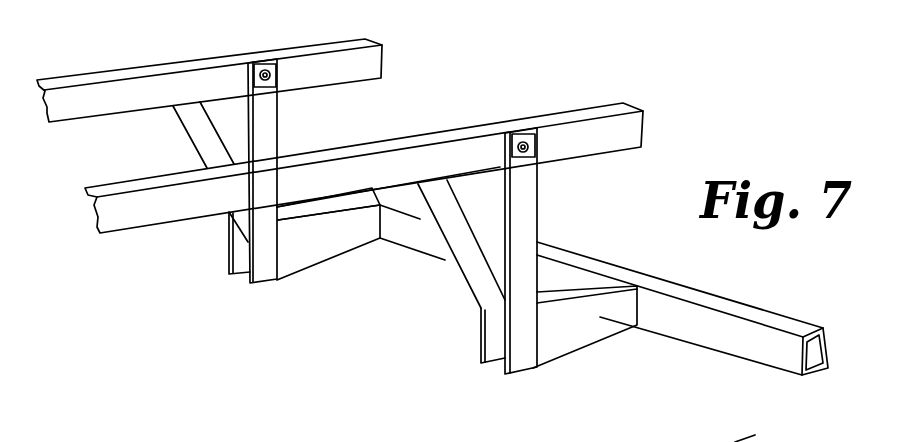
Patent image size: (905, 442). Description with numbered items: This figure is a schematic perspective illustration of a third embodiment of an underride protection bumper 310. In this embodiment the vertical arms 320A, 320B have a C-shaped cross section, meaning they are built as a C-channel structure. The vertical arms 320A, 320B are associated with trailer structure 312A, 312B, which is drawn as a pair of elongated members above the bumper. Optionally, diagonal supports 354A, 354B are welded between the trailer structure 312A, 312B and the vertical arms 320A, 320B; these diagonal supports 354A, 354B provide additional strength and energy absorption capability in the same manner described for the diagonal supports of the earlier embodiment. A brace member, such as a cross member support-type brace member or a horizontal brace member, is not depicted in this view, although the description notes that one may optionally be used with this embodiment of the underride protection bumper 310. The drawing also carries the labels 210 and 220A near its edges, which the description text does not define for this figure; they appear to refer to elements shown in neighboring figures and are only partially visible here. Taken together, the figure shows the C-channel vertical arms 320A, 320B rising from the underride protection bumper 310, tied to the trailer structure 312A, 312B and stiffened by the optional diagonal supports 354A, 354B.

The vehicle / supporting structure (partially shown) 210 is at (750, 0).
The receiver member (partially shown) 220A is at (611, 3).
The underride protection bumper 310 is at (587, 369).
The trailer structure 312A is at (168, 206).
The trailer structure 312B is at (133, 93).
The vertical arm 320A is at (528, 203).
The vertical arm 320B is at (267, 117).
The diagonal support 354A is at (477, 233).
The diagonal support 354B is at (207, 125).